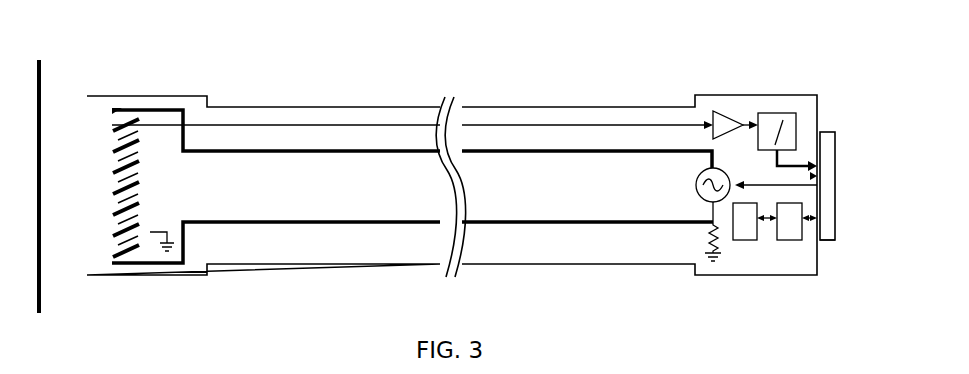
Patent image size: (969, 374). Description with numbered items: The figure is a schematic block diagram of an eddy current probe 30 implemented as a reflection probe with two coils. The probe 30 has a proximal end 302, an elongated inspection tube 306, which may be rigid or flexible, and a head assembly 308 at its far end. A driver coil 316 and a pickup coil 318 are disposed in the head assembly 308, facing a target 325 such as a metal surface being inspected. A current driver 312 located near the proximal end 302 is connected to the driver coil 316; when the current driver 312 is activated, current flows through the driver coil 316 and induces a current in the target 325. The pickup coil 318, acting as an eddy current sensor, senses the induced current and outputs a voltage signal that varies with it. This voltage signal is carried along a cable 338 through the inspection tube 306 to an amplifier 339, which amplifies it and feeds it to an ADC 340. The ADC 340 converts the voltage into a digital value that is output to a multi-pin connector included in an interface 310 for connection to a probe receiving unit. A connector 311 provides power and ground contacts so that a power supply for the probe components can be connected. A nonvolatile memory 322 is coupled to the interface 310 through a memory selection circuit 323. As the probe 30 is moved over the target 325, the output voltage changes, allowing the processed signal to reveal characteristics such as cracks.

The eddy current probe 30 is at (646, 71).
The proximal end 302 is at (713, 280).
The elongated inspection tube 306 is at (545, 264).
The head assembly 308 is at (180, 282).
The interface 310 is at (826, 126).
The connector 311 is at (834, 241).
The current driver 312 is at (700, 200).
The driver coil 316 is at (118, 224).
The pickup coil 318 is at (118, 235).
The nonvolatile memory 322 is at (746, 241).
The memory selection circuit 323 is at (795, 241).
The target 325 is at (40, 95).
The cable 338 is at (568, 125).
The amplifier 339 is at (733, 110).
The ADC 340 is at (772, 113).